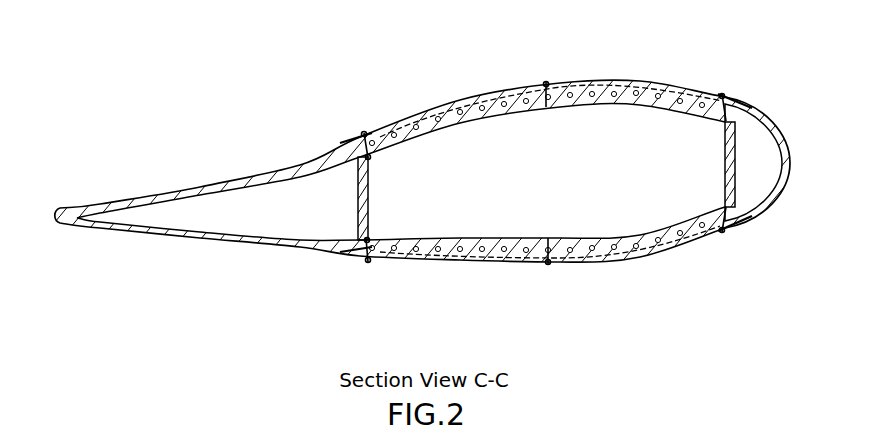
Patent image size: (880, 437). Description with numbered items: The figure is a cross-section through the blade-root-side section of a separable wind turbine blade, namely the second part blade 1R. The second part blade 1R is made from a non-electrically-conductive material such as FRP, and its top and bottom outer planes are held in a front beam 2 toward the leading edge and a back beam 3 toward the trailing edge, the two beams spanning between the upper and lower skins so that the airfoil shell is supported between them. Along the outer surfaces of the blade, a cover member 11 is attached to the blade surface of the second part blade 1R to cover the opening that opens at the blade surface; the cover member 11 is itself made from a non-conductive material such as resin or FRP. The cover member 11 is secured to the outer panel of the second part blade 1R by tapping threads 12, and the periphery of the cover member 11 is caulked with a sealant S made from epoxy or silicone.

The second part blade 1R is at (223, 183).
The front beam 2 is at (723, 158).
The back beam 3 is at (367, 188).
The cover member 11 is at (642, 84).
The tapping thread 12 is at (365, 137).
The sealant S is at (348, 140).